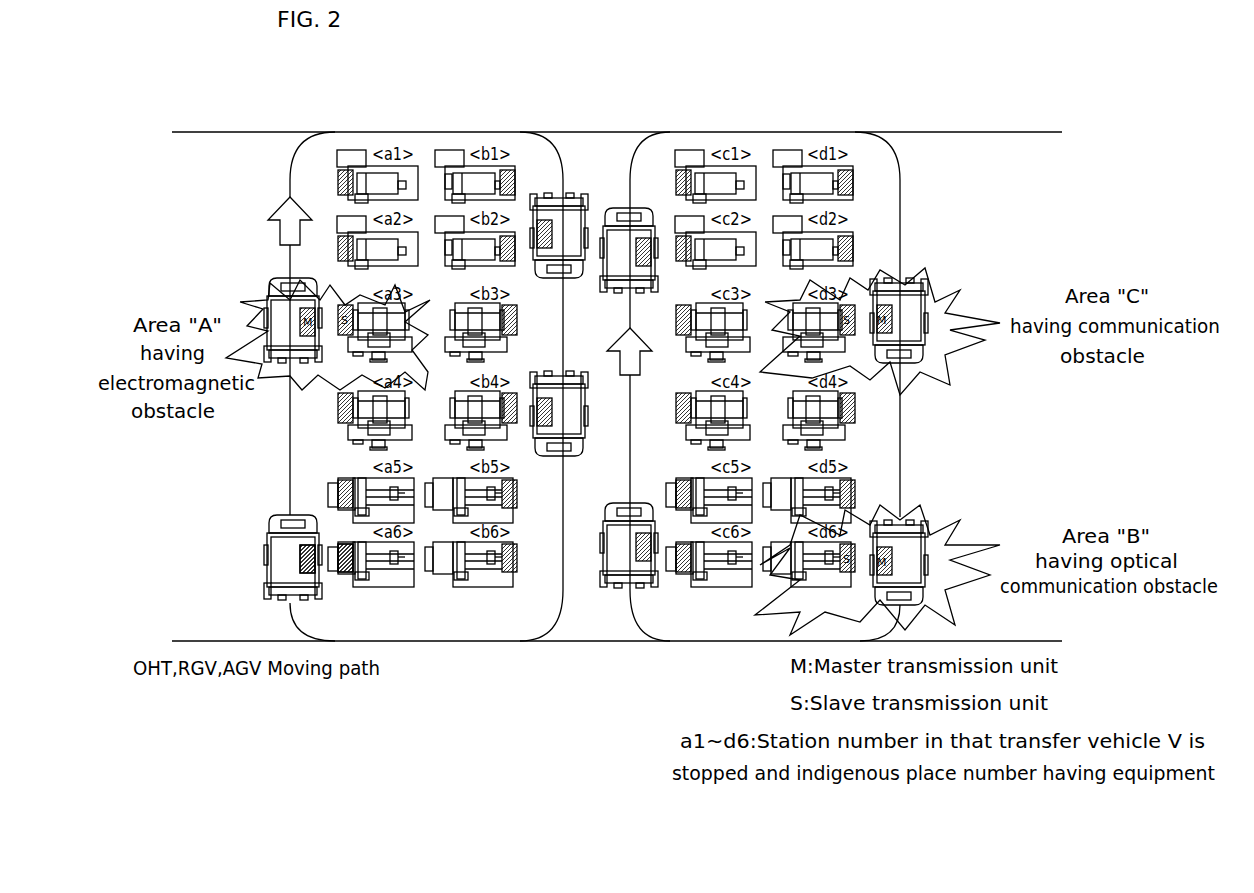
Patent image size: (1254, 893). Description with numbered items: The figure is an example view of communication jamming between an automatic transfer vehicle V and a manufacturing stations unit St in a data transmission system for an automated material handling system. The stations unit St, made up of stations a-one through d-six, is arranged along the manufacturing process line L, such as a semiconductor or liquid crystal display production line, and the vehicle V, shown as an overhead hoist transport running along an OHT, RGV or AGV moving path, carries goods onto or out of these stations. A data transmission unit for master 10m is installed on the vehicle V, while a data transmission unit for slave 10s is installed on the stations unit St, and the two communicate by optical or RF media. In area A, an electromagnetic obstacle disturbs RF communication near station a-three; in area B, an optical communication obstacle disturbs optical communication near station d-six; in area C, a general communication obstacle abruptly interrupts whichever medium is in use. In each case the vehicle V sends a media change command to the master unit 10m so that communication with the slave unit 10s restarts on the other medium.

The data transmission unit for master 10m is at (300, 563).
The data transmission unit for slave 10s is at (345, 578).
The manufacturing stations unit St is at (392, 587).
The automatic transfer vehicle V is at (262, 556).
The manufacturing process line L is at (290, 437).